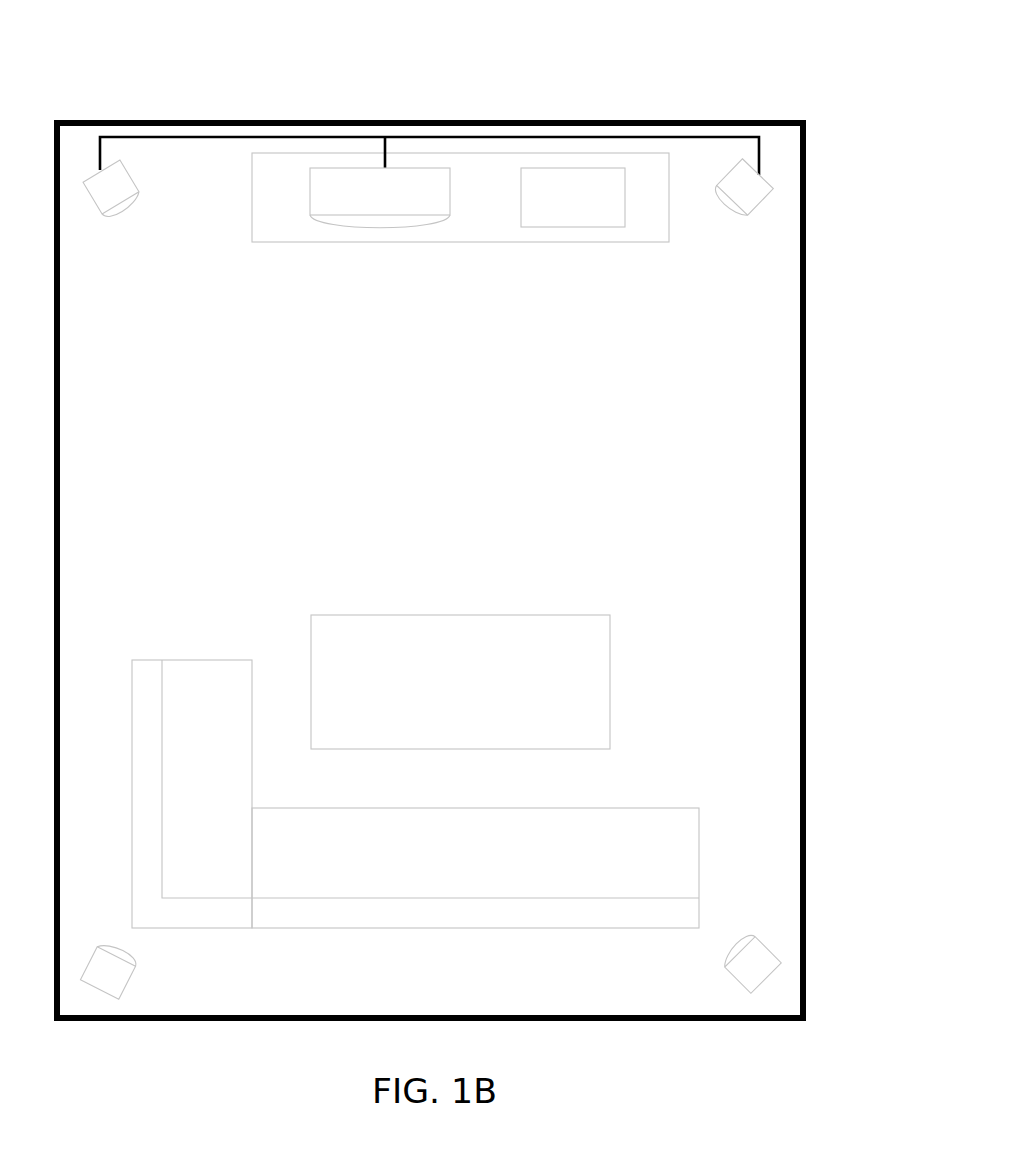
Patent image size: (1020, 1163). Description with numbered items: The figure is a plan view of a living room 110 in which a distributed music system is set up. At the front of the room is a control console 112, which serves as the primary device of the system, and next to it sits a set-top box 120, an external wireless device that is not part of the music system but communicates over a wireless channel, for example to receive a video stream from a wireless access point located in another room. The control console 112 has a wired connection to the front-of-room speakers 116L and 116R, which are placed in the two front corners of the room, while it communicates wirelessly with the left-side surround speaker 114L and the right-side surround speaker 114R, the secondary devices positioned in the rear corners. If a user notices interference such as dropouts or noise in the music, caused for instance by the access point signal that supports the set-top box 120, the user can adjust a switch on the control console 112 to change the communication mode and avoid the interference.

The living room 110 is at (852, 118).
The control console 112 is at (359, 207).
The set-top box 120 is at (552, 209).
The left-side surround speaker 114L is at (129, 980).
The right-side surround speaker 114R is at (732, 981).
The left front-of-room speaker 116L is at (117, 218).
The right front-of-room speaker 116R is at (733, 221).